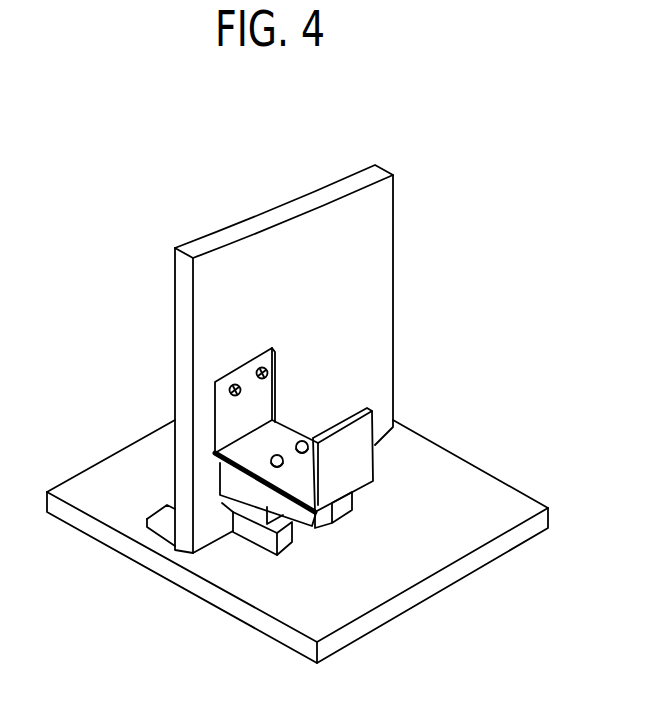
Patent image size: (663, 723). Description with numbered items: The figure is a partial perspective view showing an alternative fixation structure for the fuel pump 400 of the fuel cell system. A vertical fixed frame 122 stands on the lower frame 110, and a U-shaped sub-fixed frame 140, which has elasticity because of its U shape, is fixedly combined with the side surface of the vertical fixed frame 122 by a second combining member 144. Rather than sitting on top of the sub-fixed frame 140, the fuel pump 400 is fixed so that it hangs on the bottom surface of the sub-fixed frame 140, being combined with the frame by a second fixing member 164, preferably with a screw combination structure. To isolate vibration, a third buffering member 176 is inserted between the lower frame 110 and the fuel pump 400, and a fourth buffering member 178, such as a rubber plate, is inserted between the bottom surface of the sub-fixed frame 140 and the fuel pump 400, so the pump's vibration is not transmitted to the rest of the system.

The lower frame 110 is at (437, 583).
The second vertical fixed frame 122 is at (360, 184).
The sub-fixed frame 140 is at (314, 467).
The second combining member 144 is at (233, 397).
The second fixing member 164 is at (306, 442).
The third buffering member 176 is at (258, 541).
The fourth buffering member 178 is at (297, 512).
The fuel pump 400 is at (209, 503).